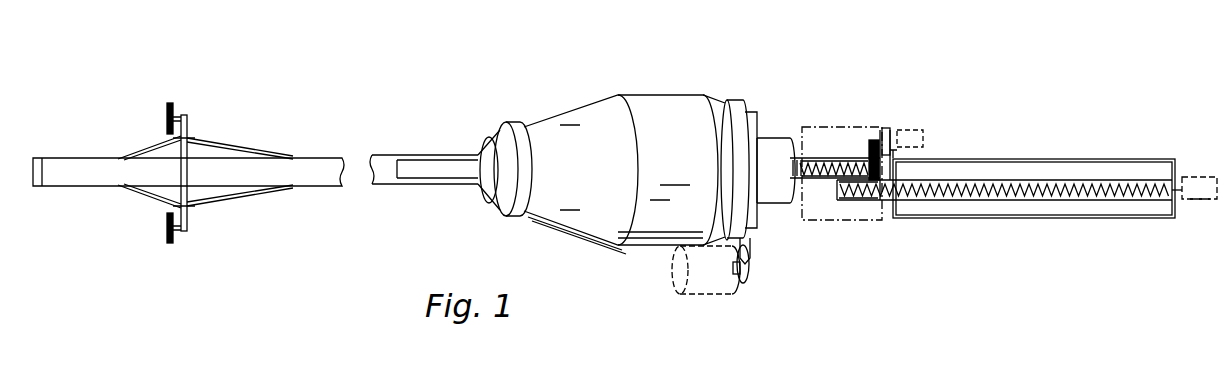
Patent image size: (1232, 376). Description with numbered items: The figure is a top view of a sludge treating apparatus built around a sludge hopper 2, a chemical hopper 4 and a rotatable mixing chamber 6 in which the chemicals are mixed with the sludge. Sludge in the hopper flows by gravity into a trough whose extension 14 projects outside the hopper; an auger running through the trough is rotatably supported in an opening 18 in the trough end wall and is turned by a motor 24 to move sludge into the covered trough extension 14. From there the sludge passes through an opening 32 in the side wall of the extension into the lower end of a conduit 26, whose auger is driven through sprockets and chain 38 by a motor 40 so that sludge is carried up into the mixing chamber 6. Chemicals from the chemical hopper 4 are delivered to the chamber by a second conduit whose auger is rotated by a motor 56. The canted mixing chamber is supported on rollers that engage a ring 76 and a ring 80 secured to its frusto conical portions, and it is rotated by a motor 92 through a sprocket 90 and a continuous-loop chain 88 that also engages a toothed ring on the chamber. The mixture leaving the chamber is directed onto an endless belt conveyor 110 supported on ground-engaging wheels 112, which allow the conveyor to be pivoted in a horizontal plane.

The sludge hopper 2 is at (1003, 158).
The chemical hopper 4 is at (857, 124).
The mixing chamber 6 is at (664, 88).
The trough extension 14 is at (873, 202).
The opening 18 is at (1183, 176).
The motor 24 is at (1210, 200).
The conduit 26 is at (830, 158).
The opening 32 is at (836, 202).
The sprockets and chain 38 is at (897, 156).
The motor 40 is at (920, 128).
The motor 56 is at (883, 128).
The ring 76 is at (729, 102).
The ring 80 is at (507, 128).
The chain 88 is at (752, 230).
The sprocket 90 is at (750, 268).
The motor 92 is at (710, 294).
The endless belt conveyor 110 is at (385, 155).
The ground-engaging wheels 112 is at (173, 110).